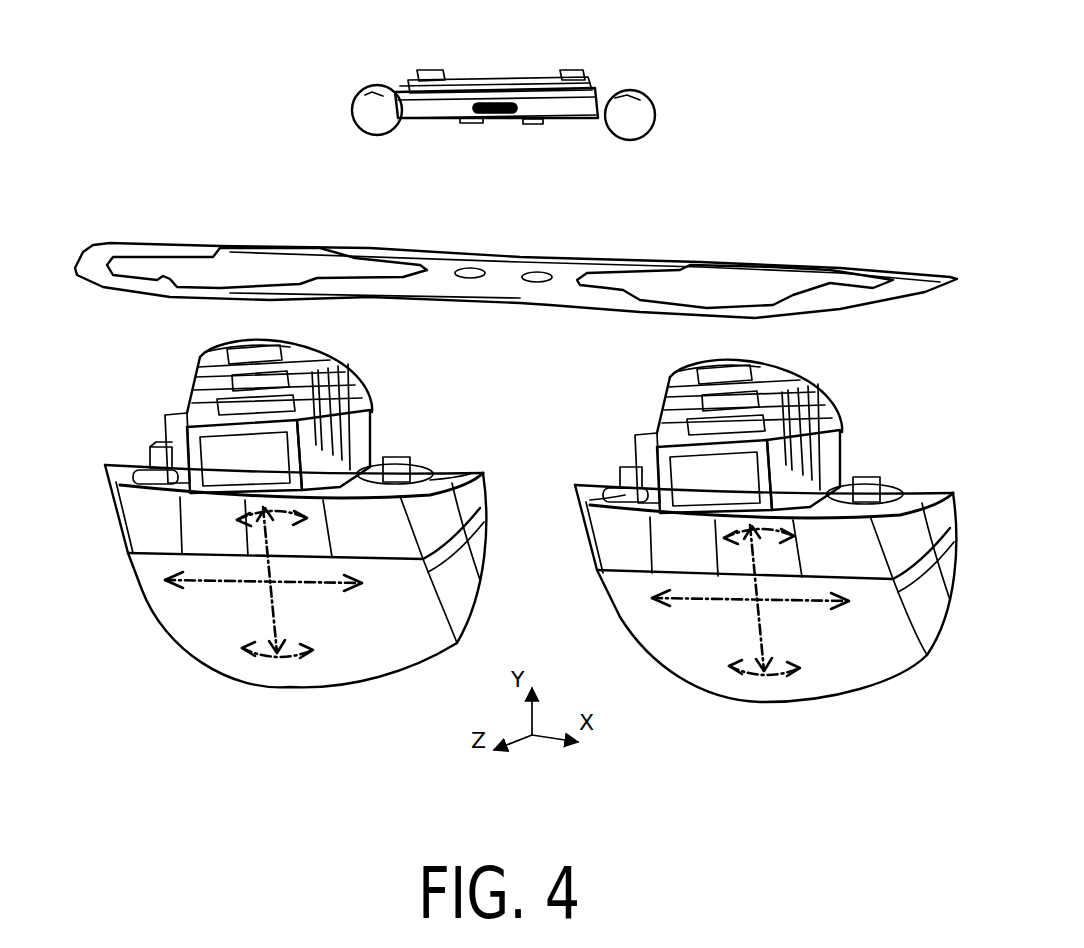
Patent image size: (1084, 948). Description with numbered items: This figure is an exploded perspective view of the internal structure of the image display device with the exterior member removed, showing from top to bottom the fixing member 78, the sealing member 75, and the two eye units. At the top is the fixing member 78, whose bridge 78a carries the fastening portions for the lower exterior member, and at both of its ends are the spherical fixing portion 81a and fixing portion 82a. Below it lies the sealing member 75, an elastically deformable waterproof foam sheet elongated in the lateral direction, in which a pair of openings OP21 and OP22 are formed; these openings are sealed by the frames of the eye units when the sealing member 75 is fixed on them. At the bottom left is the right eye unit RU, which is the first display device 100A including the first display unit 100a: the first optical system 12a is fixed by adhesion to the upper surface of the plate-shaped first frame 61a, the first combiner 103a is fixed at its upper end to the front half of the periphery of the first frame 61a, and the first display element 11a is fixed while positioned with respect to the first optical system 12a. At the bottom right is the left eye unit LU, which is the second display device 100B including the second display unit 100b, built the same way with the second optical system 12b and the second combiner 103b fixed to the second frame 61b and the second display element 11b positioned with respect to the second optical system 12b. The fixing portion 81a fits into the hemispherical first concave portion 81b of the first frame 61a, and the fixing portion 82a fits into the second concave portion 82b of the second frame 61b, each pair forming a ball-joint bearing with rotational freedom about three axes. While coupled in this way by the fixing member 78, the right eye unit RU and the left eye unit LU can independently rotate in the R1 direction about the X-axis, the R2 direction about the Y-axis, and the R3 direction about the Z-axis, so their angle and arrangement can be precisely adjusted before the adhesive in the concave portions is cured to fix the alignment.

The fixing member 78 is at (497, 82).
The bridge 78a is at (458, 118).
The first fixing portion 81a is at (377, 123).
The second fixing portion 82a is at (627, 130).
The sealing member 75 is at (516, 249).
The opening OP21 is at (250, 270).
The opening OP22 is at (745, 288).
The first display device 100A is at (262, 513).
The first display unit 100a is at (147, 427).
The first optical system 12a is at (347, 367).
The first concave portion 81b is at (418, 457).
The first frame 61a is at (442, 467).
The first display element 11a is at (262, 539).
The first combiner 103a is at (228, 643).
The right eye unit RU is at (292, 680).
The second display device 100B is at (729, 529).
The second display unit 100b is at (785, 435).
The second optical system 12b is at (673, 377).
The second concave portion 82b is at (615, 470).
The second frame 61b is at (597, 478).
The second display element 11b is at (729, 556).
The second combiner 103b is at (860, 673).
The left eye unit LU is at (762, 696).
The R1 direction R1 is at (559, 589).
The R2 direction R2 is at (495, 638).
The R3 direction R3 is at (541, 634).